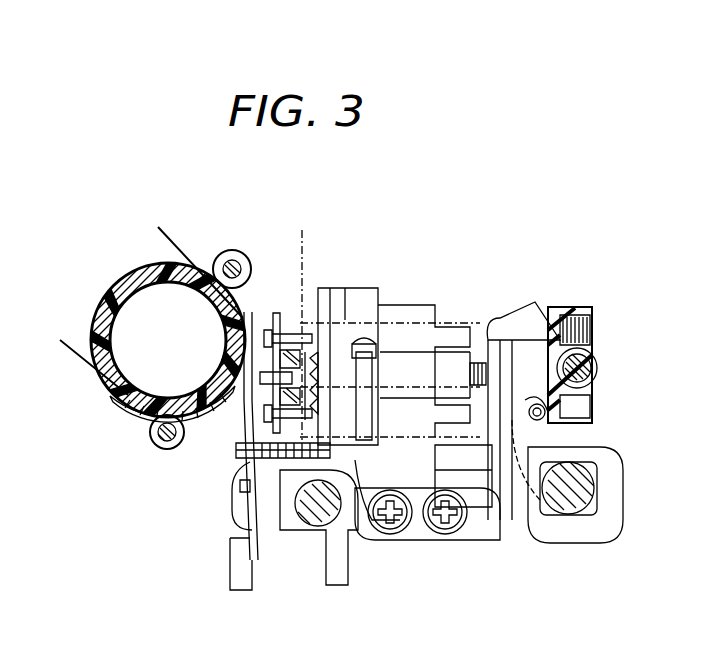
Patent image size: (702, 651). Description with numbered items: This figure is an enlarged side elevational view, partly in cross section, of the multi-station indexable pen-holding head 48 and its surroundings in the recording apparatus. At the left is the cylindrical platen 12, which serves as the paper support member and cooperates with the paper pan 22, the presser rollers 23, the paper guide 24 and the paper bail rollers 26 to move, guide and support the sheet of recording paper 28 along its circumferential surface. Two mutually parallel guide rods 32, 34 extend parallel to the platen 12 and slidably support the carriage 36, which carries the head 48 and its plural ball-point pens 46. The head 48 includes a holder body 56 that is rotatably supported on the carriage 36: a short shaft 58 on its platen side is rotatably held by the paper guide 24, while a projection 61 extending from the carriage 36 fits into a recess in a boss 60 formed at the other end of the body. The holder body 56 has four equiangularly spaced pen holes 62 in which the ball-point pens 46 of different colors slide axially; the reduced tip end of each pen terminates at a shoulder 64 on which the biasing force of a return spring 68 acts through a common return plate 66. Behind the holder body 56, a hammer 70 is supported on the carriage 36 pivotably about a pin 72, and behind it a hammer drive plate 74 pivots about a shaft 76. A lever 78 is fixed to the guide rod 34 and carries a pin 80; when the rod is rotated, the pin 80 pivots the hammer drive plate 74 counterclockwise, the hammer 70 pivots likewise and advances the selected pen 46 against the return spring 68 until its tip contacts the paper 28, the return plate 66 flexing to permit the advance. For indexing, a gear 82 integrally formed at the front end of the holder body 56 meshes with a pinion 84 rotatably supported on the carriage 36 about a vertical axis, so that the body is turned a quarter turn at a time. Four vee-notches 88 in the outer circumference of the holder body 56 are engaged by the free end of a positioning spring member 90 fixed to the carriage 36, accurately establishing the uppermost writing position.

The platen 12 is at (143, 268).
The paper pan 22 is at (120, 410).
The presser rollers 23 is at (160, 447).
The paper guide 24 is at (247, 417).
The paper bail rollers 26 is at (233, 251).
The sheet of recording paper 28 is at (178, 246).
The guide rod 32 is at (310, 522).
The guide rod 34 is at (578, 510).
The carriage 36 is at (502, 500).
The ball-point pens 46 is at (454, 305).
The multi-station indexable pen-holding head 48 is at (421, 247).
The holder body 56 is at (366, 290).
The short shaft 58 is at (268, 380).
The boss 60 is at (478, 305).
The projection 61 is at (480, 346).
The pen holes 62 is at (340, 300).
The shoulder 64 is at (299, 322).
The return plate 66 is at (293, 312).
The return spring 68 is at (290, 335).
The hammer 70 is at (530, 305).
The pin 72 is at (508, 453).
The hammer drive plate 74 is at (584, 308).
The shaft 76 is at (597, 362).
The lever 78 is at (578, 430).
The pin 80 is at (548, 420).
The gear 82 is at (323, 290).
The pinion 84 is at (246, 466).
The vee-notches 88 is at (384, 312).
The positioning spring member 90 is at (358, 500).